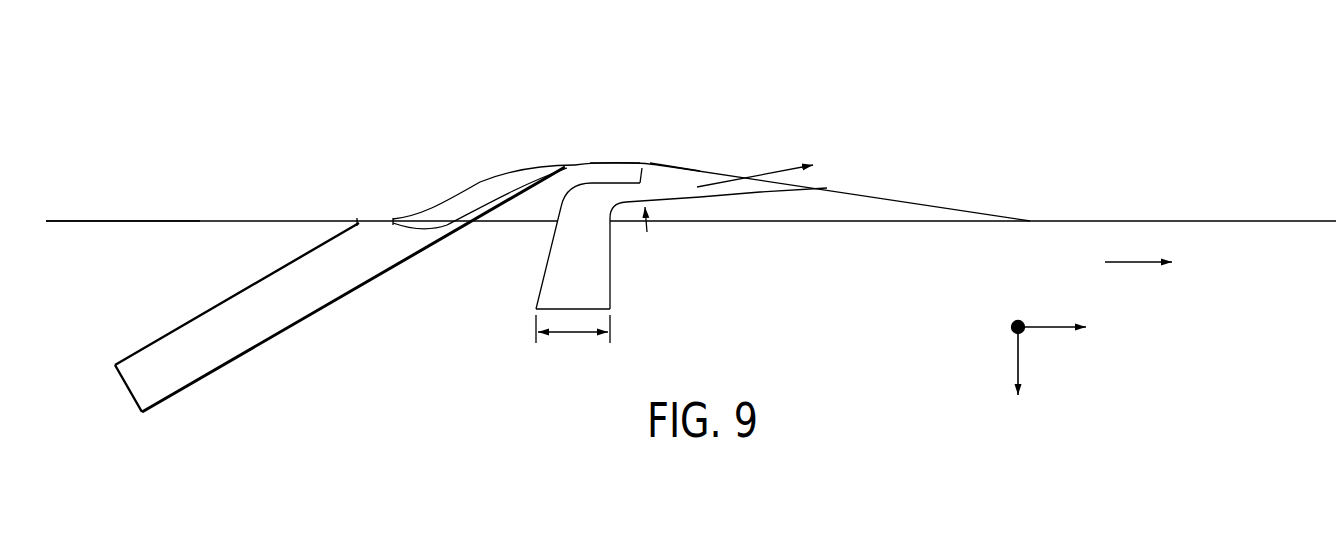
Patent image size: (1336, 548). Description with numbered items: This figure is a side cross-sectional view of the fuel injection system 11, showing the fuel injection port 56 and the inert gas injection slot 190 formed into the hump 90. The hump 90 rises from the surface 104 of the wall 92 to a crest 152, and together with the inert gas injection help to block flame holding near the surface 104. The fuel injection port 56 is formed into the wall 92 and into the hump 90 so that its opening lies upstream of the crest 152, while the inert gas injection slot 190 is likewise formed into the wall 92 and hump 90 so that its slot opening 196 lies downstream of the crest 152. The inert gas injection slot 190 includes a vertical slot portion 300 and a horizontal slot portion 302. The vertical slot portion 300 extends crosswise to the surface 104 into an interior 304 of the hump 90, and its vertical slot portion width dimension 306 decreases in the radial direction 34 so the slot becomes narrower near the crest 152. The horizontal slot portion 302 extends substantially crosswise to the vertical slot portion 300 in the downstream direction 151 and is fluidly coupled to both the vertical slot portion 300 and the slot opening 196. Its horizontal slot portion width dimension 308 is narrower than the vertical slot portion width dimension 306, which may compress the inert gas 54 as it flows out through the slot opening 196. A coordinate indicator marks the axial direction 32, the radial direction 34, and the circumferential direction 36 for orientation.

The fuel injection system 11 is at (797, 42).
The wall 92 is at (70, 216).
The surface 104 is at (200, 219).
The fuel injection port 56 is at (218, 347).
The hump 90 is at (537, 203).
The inert gas 54 is at (749, 175).
The crest 152 is at (613, 163).
The slot opening 196 is at (678, 175).
The inert gas injection slot 190 is at (704, 176).
The horizontal slot portion width dimension 308 is at (637, 179).
The interior 304 is at (792, 204).
The vertical slot portion 300 is at (580, 270).
The horizontal slot portion 302 is at (682, 188).
The vertical slot portion width dimension 306 is at (570, 333).
The axial direction 32 is at (1046, 323).
The radial direction 34 is at (1018, 355).
The circumferential direction 36 is at (1010, 325).
The downstream direction 151 is at (1135, 264).